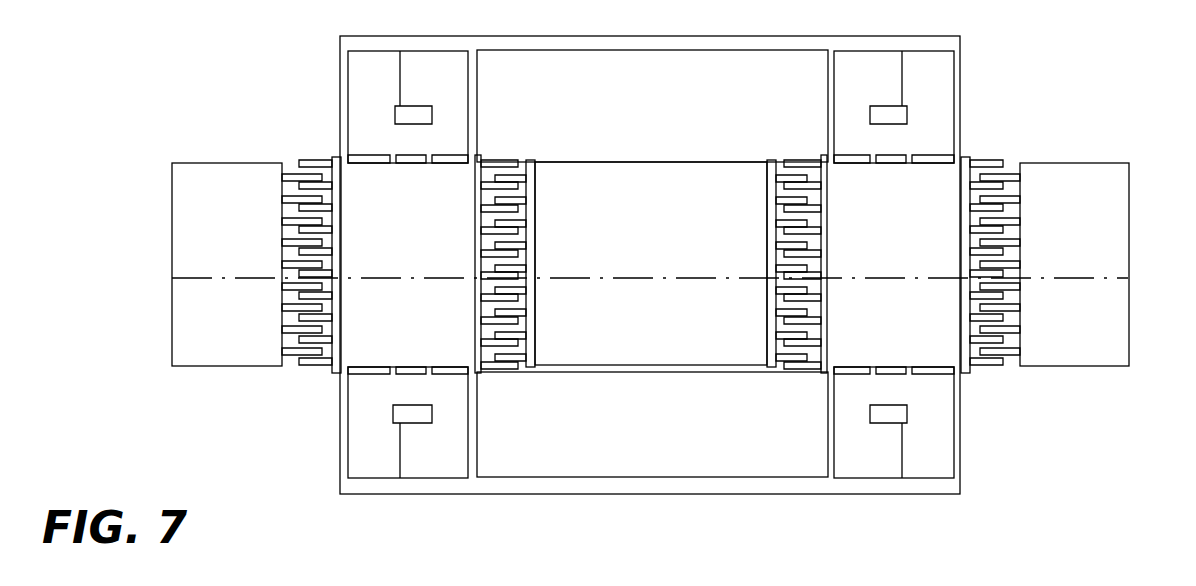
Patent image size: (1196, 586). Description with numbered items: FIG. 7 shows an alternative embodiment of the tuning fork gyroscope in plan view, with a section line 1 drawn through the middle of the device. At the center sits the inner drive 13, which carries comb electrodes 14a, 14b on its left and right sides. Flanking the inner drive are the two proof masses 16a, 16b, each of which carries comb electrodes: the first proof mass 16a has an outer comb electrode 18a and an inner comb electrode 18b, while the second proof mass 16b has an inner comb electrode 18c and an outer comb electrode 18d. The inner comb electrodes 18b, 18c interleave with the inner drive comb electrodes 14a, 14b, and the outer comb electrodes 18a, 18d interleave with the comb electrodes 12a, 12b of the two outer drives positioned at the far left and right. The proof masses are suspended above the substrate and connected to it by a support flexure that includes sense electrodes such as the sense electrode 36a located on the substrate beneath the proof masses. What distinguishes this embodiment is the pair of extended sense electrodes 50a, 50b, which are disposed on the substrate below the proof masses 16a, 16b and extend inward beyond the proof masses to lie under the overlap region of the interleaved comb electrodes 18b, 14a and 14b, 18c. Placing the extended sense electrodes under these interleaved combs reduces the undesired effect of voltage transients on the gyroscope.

The section line 1- 1 is at (177, 281).
The comb electrode 12a is at (293, 354).
The comb electrode 12b is at (1010, 354).
The inner drive 13 is at (661, 235).
The comb electrode 14a is at (530, 175).
The comb electrode 14b is at (772, 175).
The proof mass 16a is at (423, 239).
The proof mass 16b is at (912, 239).
The comb electrode 18a is at (327, 364).
The comb electrode 18b is at (493, 166).
The comb electrode 18c is at (820, 163).
The comb electrode 18d is at (977, 362).
The sense electrode 36a is at (360, 154).
The extended sense electrode 50a is at (443, 156).
The extended sense electrode 50b is at (846, 155).